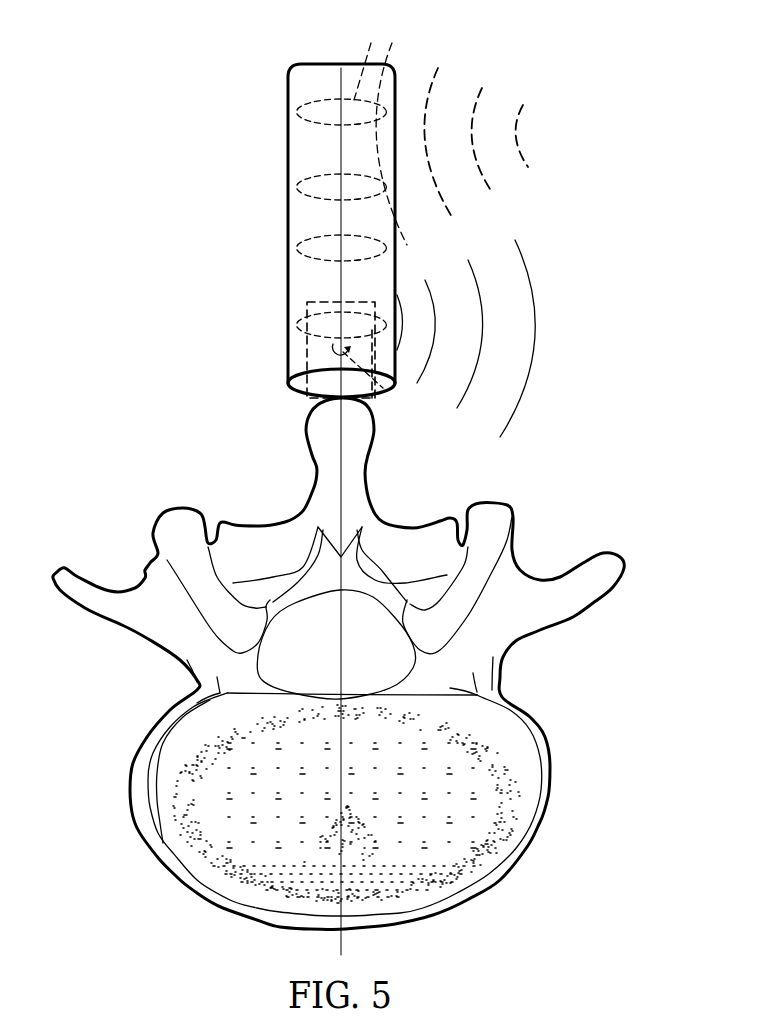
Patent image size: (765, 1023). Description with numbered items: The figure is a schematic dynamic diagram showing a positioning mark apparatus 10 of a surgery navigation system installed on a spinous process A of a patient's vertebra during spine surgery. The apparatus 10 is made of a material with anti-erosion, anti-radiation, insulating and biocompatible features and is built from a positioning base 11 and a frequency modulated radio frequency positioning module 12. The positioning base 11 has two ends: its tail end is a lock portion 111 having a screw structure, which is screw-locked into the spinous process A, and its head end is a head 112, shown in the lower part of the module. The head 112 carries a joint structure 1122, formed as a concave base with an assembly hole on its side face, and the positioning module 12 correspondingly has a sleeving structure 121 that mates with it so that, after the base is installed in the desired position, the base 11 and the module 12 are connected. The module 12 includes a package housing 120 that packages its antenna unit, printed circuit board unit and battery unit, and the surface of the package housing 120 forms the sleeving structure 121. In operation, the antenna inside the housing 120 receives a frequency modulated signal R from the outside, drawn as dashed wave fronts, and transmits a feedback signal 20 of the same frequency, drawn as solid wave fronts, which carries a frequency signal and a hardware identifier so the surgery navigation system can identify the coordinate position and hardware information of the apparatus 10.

The positioning mark apparatus 10 is at (234, 290).
The positioning base 11 is at (208, 310).
The frequency modulated radio frequency positioning module 12 is at (280, 208).
The package housing 120 is at (308, 222).
The head 112 is at (291, 355).
The lock portion 111 is at (303, 457).
The joint structure 1122 is at (383, 388).
The sleeving structure 121 is at (412, 382).
The feedback signal 20 is at (517, 403).
The frequency modulated signal R is at (441, 132).
The spinous process A is at (365, 428).